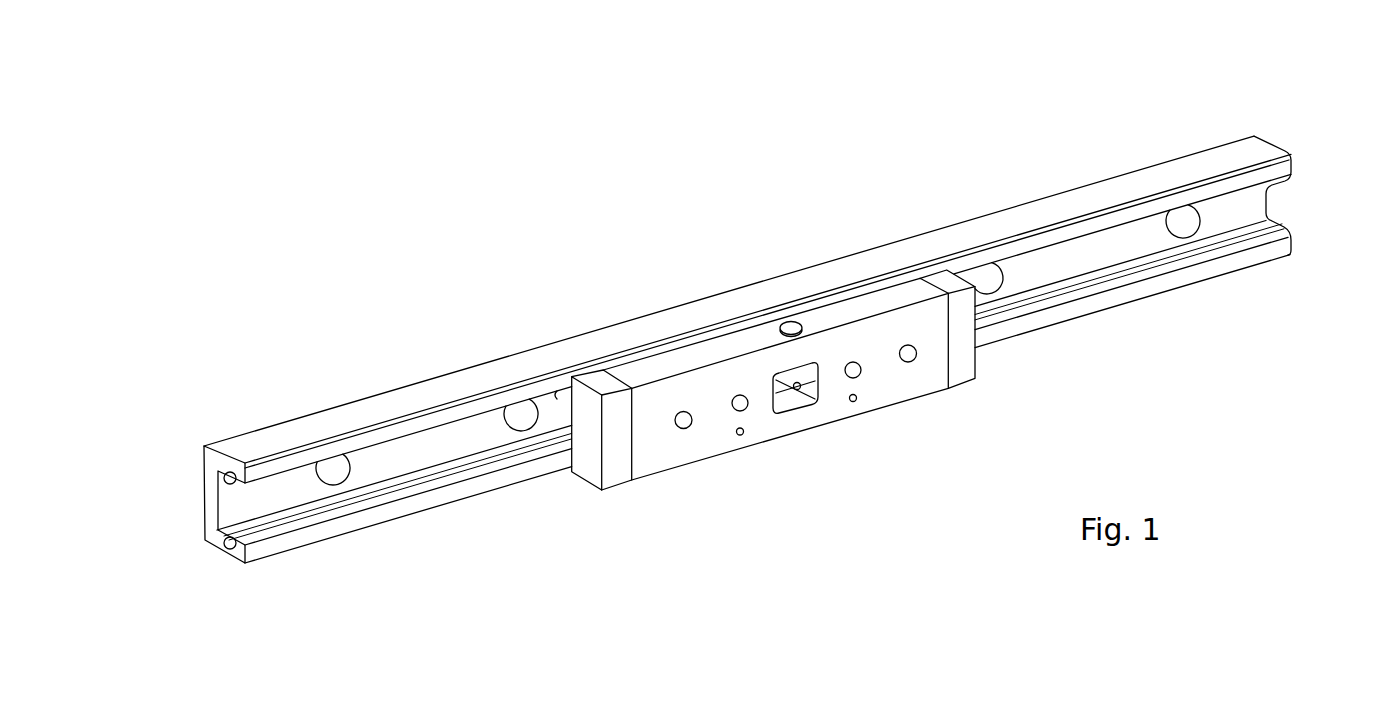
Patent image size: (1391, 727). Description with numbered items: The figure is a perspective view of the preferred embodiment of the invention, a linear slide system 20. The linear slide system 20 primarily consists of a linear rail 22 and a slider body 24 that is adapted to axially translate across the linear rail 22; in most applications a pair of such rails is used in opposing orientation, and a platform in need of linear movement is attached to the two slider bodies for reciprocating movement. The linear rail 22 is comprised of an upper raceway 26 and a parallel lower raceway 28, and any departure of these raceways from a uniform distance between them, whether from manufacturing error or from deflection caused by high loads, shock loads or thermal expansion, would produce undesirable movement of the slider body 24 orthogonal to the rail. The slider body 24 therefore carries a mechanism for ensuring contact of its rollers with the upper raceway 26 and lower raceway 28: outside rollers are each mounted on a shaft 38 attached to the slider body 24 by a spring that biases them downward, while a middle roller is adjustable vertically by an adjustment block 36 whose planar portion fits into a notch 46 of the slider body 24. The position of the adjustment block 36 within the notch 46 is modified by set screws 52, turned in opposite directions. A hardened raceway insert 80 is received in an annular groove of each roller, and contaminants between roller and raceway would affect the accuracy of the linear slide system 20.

The linear slide system 20 is at (921, 138).
The linear rail 22 is at (1026, 218).
The slider body 24 is at (882, 397).
The upper raceway 26 is at (1283, 187).
The lower raceway 28 is at (1291, 236).
The adjustment block 36 is at (779, 395).
The shaft 38 is at (688, 426).
The notch 46 is at (815, 364).
The set screw 52 is at (798, 321).
The hardened raceway insert 80 is at (225, 478).